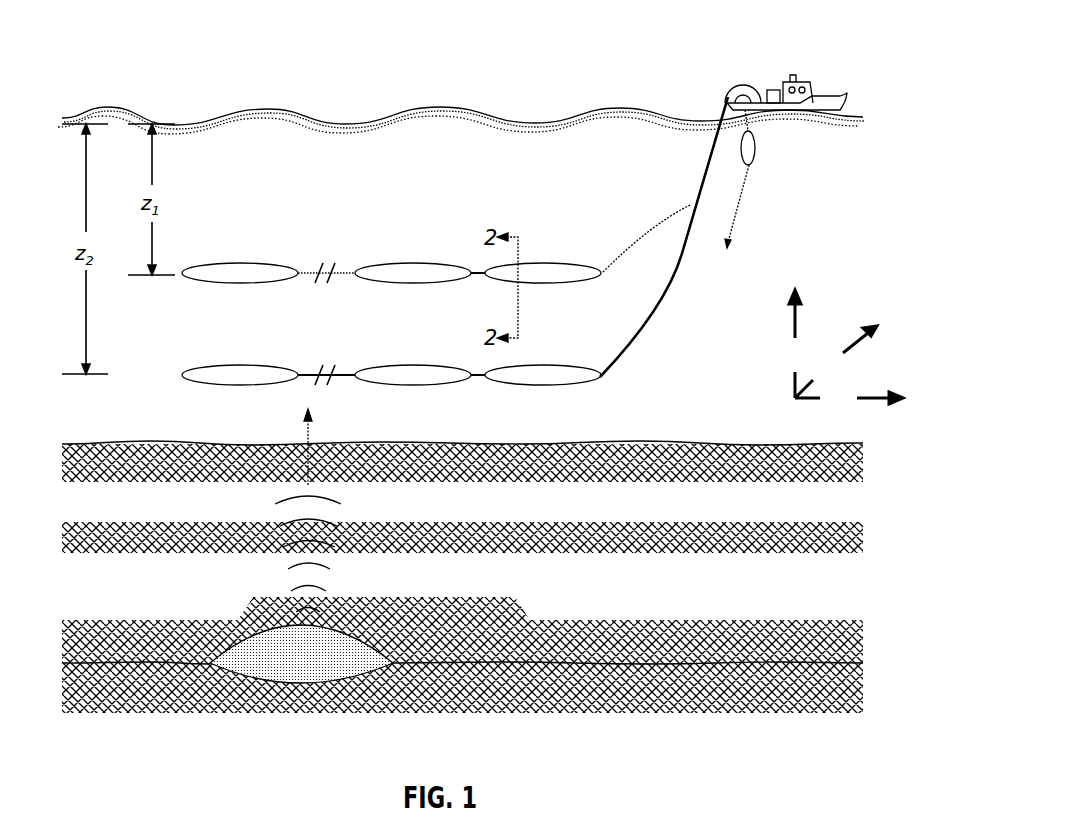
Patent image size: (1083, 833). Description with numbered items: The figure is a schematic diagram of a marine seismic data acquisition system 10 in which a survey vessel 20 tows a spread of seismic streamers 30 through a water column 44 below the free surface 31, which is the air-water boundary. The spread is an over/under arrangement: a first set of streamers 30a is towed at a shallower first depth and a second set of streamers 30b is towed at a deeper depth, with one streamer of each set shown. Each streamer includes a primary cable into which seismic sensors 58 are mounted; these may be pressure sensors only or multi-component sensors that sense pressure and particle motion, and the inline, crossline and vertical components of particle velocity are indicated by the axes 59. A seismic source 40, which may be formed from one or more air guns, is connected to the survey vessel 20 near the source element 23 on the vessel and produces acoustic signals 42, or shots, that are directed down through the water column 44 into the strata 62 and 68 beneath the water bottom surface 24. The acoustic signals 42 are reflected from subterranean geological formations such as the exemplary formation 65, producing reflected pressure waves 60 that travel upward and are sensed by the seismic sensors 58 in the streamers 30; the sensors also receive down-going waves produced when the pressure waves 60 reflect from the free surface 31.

The marine seismic data acquisition system 10 is at (255, 69).
The survey vessel 20 is at (836, 100).
The seismic source 23 is at (771, 90).
The water bottom surface 24 is at (669, 442).
The seismic streamers 30 is at (691, 205).
The first set of streamers 30a is at (674, 226).
The second set of streamers 30b is at (659, 300).
The free surface 31 is at (410, 106).
The seismic source 40 is at (757, 147).
The acoustic signals 42 is at (731, 222).
The water column 44 is at (761, 329).
The seismic sensors 58 is at (262, 264).
The axes 59 is at (787, 403).
The pressure waves 60 is at (273, 575).
The strata 62 is at (468, 643).
The formation 65 is at (318, 670).
The strata 68 is at (468, 706).